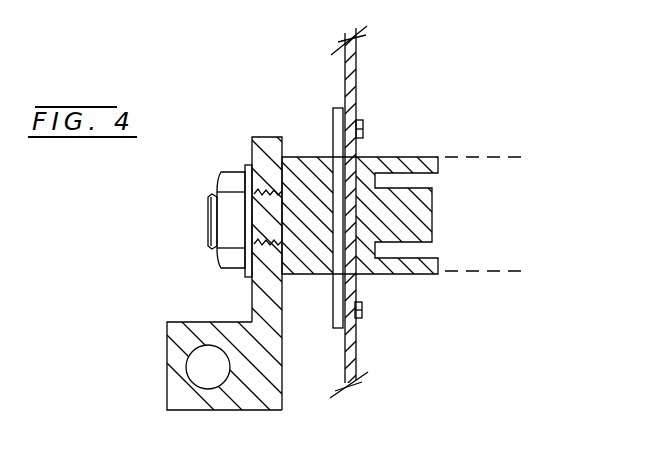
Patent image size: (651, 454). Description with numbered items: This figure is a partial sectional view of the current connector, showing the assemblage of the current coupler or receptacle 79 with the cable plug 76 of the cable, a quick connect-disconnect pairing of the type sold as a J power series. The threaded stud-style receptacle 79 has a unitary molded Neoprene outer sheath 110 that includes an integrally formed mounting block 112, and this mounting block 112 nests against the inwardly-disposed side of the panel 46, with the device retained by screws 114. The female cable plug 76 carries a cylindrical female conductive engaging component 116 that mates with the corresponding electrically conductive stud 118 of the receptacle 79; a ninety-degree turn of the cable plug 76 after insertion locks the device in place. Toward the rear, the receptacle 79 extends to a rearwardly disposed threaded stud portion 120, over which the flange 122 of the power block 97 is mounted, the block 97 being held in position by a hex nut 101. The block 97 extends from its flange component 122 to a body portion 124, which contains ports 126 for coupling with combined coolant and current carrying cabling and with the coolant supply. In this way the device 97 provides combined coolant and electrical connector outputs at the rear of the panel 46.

The panel 46 is at (360, 56).
The cable plug 76 is at (500, 152).
The current coupler or receptacle 79 is at (430, 136).
The power block 97 is at (259, 410).
The hex nut 101 is at (227, 179).
The outer sheath 110 is at (401, 275).
The mounting block 112 is at (334, 109).
The screws 114 is at (364, 128).
The female conductive engaging component 116 is at (438, 182).
The electrically conductive stud 118 is at (422, 224).
The threaded stud portion 120 is at (262, 230).
The flange 122 is at (261, 282).
The body portion 124 is at (185, 330).
The ports 126 is at (199, 362).